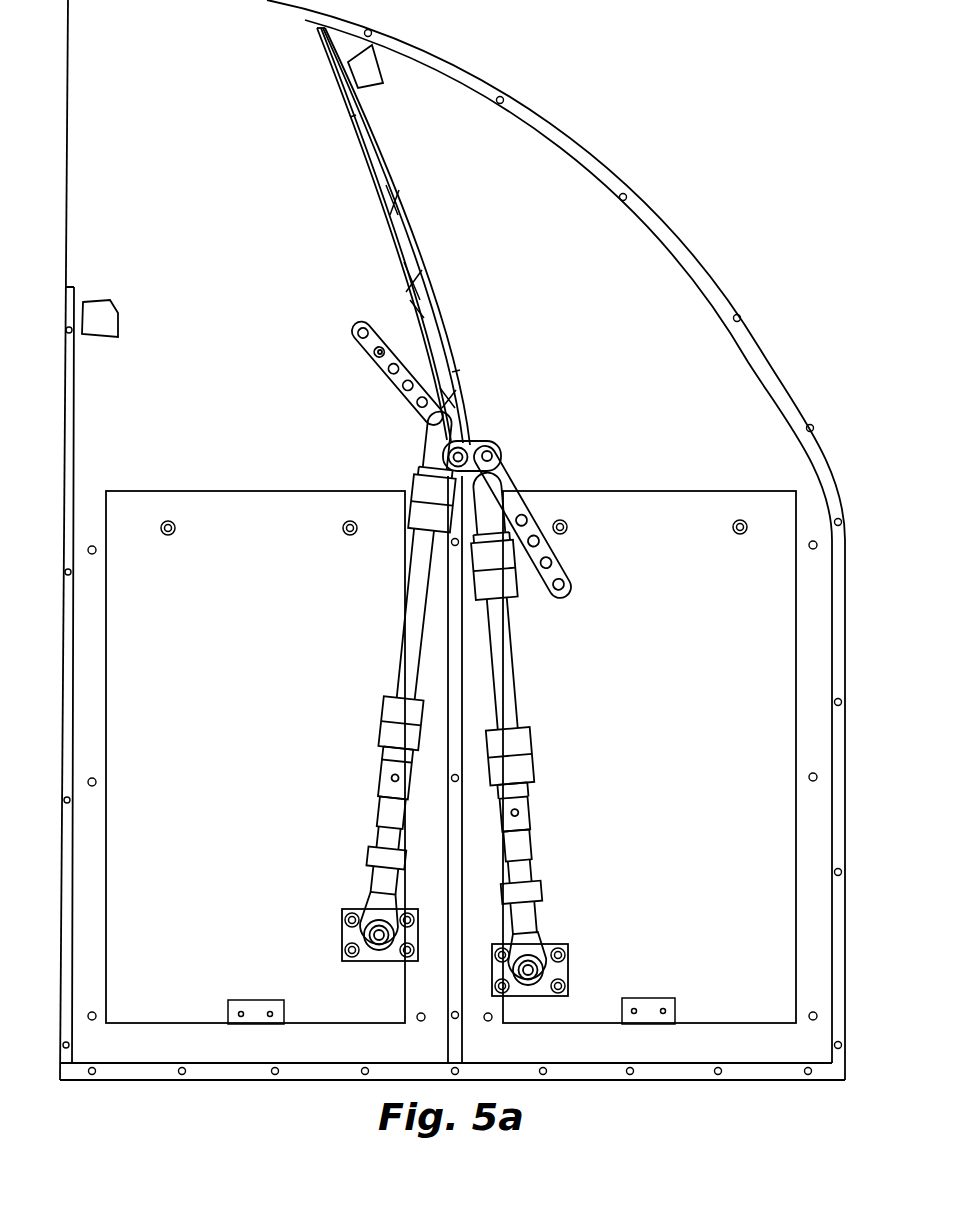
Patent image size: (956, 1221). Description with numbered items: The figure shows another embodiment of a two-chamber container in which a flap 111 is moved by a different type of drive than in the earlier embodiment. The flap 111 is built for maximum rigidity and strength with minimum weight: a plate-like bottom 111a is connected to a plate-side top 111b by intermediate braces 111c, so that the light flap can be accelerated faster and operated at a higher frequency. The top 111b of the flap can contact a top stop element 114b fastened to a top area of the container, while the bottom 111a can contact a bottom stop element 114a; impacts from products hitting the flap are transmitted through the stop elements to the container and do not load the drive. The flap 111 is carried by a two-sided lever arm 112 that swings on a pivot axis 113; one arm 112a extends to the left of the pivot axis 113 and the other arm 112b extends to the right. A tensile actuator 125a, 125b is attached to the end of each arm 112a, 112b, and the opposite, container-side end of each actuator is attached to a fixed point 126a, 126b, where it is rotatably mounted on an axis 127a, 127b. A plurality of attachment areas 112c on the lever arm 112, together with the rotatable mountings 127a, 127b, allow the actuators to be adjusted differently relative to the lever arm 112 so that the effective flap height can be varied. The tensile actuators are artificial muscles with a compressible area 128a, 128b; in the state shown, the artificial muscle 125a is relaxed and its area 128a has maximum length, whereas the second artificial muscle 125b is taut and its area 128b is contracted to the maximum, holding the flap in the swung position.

The flap 111 is at (438, 250).
The bottom of the flap 111a is at (350, 117).
The top of the flap 111b is at (468, 365).
The intermediate braces 111c is at (410, 265).
The lever arm 112 is at (467, 461).
The arm 112a is at (328, 332).
The arm 112b is at (582, 582).
The attachment areas 112c is at (408, 383).
The pivot axis 113 is at (468, 449).
The bottom stop element 114a is at (110, 288).
The top stop element 114b is at (393, 72).
The tensile actuator 125a is at (342, 728).
The tensile actuator 125b is at (558, 782).
The fixed point 126a is at (330, 952).
The fixed point 126b is at (575, 967).
The axis 127a is at (377, 934).
The axis 127b is at (530, 967).
The compressible area 128a is at (388, 622).
The compressible area 128b is at (520, 665).